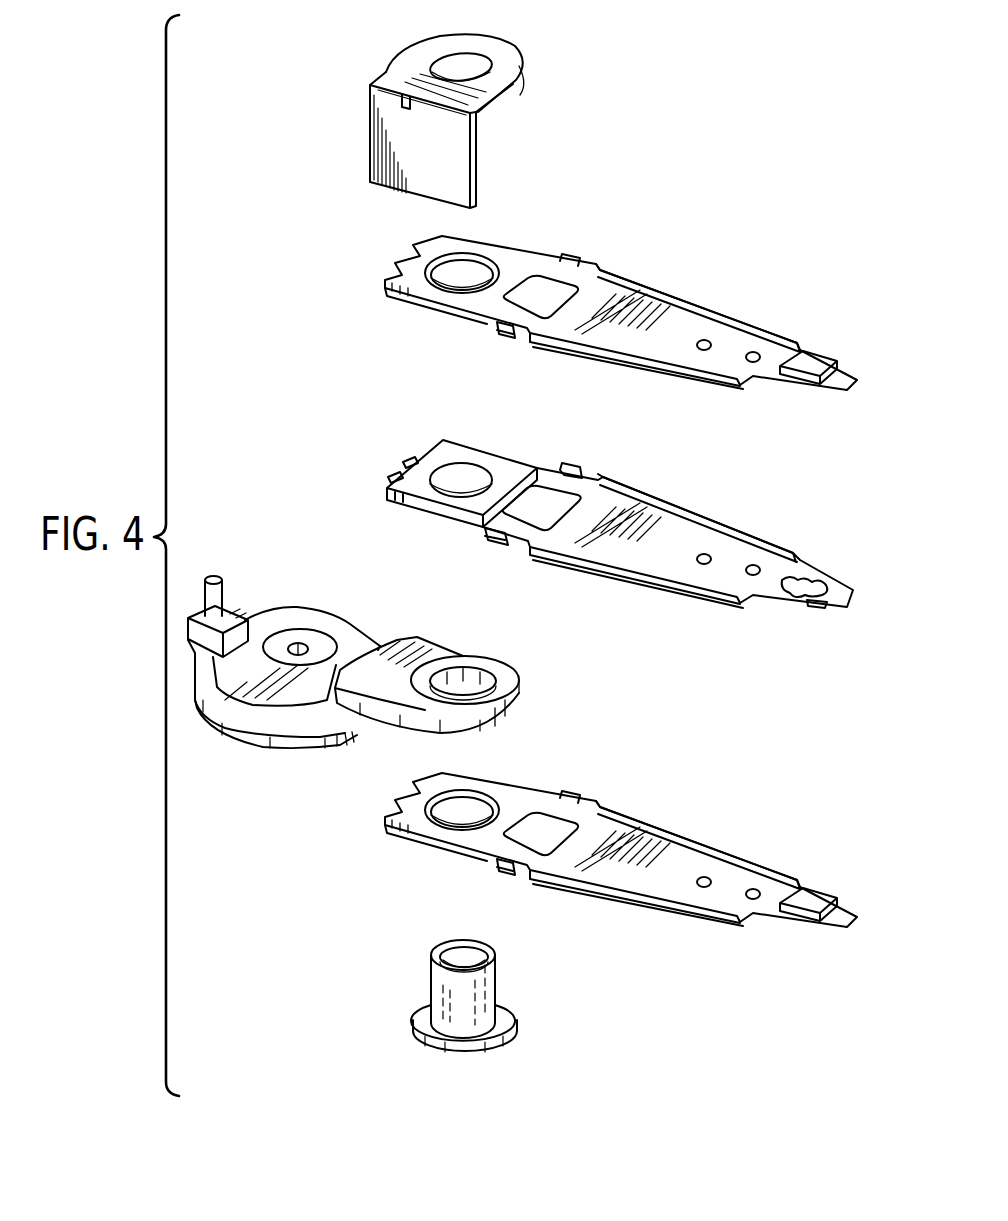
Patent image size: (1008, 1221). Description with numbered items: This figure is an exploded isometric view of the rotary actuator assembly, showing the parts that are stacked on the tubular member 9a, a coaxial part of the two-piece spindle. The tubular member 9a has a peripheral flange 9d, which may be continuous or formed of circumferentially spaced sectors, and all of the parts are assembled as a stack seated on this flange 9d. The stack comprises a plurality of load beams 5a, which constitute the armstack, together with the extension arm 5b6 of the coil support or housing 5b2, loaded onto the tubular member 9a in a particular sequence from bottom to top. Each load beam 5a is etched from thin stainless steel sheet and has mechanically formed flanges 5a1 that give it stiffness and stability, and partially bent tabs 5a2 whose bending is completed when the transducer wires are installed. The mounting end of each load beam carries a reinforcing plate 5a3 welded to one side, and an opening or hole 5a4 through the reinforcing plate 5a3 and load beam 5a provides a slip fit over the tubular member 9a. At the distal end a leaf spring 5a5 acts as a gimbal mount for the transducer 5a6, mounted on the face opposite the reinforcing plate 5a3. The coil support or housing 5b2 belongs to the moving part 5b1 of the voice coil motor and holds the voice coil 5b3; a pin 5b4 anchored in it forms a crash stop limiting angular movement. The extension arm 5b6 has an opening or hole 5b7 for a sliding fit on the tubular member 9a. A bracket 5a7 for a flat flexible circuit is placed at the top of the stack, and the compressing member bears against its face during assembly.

The load beam 5a is at (672, 282).
The flange 5a1 is at (645, 283).
The tab 5a2 is at (570, 258).
The reinforcing plate 5a3 is at (338, 503).
The opening or hole 5a4 is at (466, 272).
The leaf spring 5a5 is at (817, 575).
The transducer 5a6 is at (812, 355).
The bracket 5a7 is at (517, 72).
The moving part of the voice coil motor 5b1 is at (346, 658).
The coil support or housing 5b2 is at (297, 697).
The voice coil 5b3 is at (346, 740).
The pin 5b4 is at (210, 578).
The extension arm 5b6 is at (395, 658).
The opening or hole 5b7 is at (478, 678).
The tubular member 9a is at (492, 963).
The peripheral flange 9d is at (510, 1020).